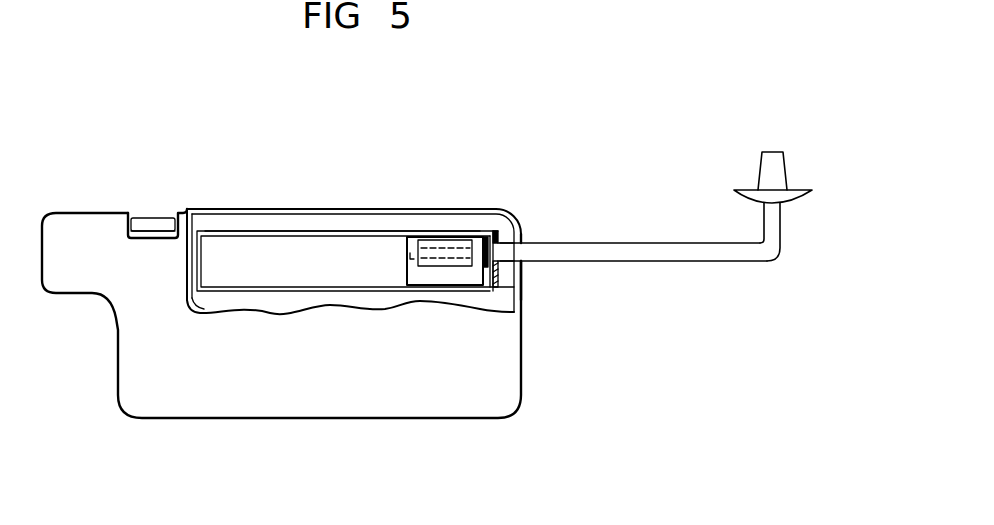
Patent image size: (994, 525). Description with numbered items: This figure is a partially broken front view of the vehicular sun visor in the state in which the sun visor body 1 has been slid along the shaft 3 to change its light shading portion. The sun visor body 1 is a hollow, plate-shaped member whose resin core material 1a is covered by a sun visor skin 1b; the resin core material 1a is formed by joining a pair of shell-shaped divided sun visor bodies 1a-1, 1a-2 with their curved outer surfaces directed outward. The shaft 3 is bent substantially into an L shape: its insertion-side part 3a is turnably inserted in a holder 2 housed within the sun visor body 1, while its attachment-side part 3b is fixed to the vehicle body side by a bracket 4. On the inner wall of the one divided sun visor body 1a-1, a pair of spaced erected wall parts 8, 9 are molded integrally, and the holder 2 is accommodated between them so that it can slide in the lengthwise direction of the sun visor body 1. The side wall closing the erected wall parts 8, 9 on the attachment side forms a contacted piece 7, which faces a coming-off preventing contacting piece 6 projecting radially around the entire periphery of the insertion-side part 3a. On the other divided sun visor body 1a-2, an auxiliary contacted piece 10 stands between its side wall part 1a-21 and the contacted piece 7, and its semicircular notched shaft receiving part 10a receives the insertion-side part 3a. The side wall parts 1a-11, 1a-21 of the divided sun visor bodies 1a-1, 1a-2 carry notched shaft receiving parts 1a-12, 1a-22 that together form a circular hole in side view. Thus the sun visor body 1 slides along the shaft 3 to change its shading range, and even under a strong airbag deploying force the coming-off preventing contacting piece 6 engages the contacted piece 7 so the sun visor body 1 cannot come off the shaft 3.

The sun visor body 1 is at (113, 406).
The resin core material 1a is at (327, 200).
The sun visor skin 1b is at (298, 393).
The holder 2 is at (448, 231).
The shaft 3 is at (656, 287).
The insertion-side part 3a is at (718, 262).
The attachment-side part 3b is at (783, 258).
The bracket 4 is at (746, 190).
The coming-off preventing contacting piece 6 is at (485, 232).
The contacted piece 7 is at (490, 273).
The erected wall part 8 is at (237, 291).
The erected wall part 9 is at (273, 231).
The auxiliary contacted piece 10 is at (523, 290).
The notched shaft receiving part 10a is at (502, 285).
The divided sun visor body 1a-1 is at (531, 296).
The divided sun visor body 1a-2 is at (612, 319).
The side wall part 1a-11 is at (521, 233).
The notched shaft receiving part 1a-12 is at (549, 241).
The side wall part 1a-21 is at (546, 166).
The notched shaft receiving part 1a-22 is at (578, 217).